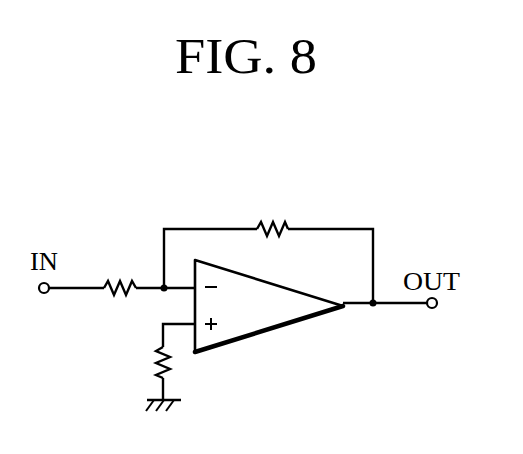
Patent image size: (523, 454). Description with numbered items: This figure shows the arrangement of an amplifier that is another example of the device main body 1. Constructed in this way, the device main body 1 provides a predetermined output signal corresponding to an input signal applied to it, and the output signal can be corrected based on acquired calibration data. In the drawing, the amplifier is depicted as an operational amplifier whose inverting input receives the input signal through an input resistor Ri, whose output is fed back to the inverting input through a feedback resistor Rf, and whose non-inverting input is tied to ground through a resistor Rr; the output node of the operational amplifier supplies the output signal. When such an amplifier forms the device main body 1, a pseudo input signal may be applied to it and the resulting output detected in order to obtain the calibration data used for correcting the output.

The device main body 1 is at (284, 334).
The input resistor Ri is at (120, 271).
The feedback resistor Rf is at (272, 214).
The reference resistor Rr is at (146, 362).